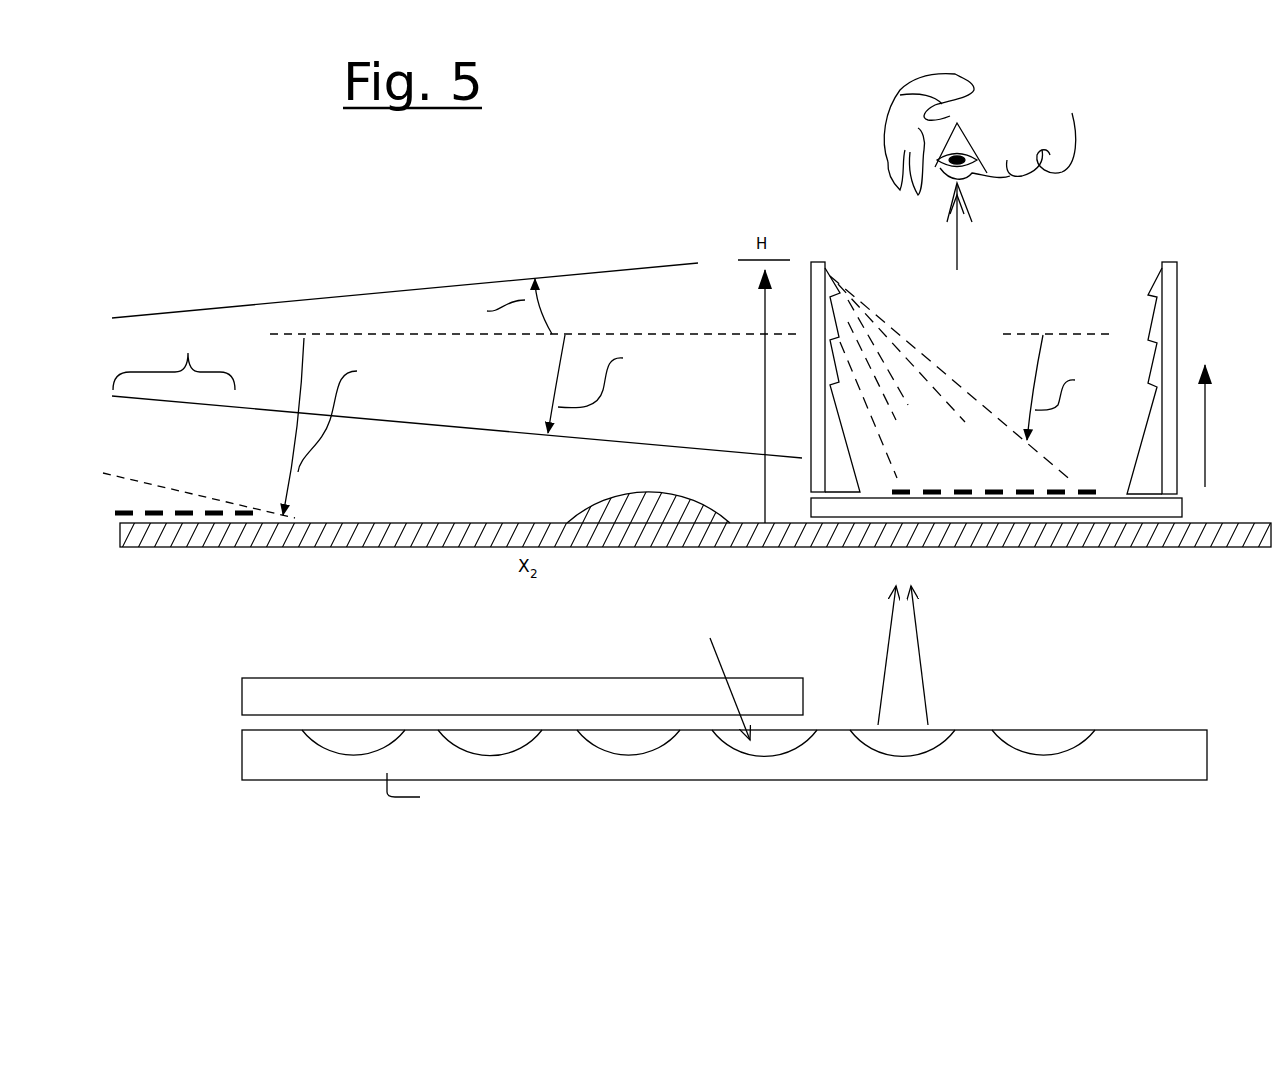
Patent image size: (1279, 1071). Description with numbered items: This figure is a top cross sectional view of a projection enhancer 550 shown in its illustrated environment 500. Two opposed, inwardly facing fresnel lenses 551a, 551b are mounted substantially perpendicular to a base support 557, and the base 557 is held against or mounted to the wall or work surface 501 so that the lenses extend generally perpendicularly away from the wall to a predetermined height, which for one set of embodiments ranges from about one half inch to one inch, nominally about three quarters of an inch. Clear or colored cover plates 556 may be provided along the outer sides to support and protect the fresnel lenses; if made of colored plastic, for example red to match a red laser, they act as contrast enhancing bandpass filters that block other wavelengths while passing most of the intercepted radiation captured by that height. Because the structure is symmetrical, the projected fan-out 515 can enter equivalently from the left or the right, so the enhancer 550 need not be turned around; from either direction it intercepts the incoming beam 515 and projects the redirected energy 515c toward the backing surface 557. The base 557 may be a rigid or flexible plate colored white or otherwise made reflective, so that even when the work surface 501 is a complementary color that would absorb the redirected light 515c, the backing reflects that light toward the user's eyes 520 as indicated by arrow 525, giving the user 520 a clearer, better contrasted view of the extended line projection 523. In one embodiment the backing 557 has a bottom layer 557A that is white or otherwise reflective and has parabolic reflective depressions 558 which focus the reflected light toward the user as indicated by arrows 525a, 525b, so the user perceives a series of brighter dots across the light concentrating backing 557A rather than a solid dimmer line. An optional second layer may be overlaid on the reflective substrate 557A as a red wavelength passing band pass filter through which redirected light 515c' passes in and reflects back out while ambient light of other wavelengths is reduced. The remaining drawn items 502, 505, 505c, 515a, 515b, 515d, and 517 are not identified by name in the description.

The illustrated environment 500 is at (452, 153).
The wall 501 is at (475, 521).
The bump 502 is at (604, 493).
The optical axis 505 is at (603, 333).
The optical axis of reflected light 505c is at (1062, 330).
The projected fan-out 515 is at (623, 266).
The lower light ray 515a is at (188, 493).
The light ray 515b is at (650, 436).
The redirected light 515c is at (951, 379).
The redirected light 515c' is at (720, 676).
The upper light ray 515d is at (472, 283).
The illuminated region 517 is at (253, 421).
The user's eyes 520 is at (1078, 127).
The extended line projection 523 is at (932, 486).
The reflected energy arrow 525 is at (958, 236).
The reflected light arrow 525a is at (878, 628).
The reflected light arrow 525b is at (920, 628).
The projection enhancer 550 is at (1086, 252).
The fresnel lens 551a is at (834, 268).
The fresnel lens 551b is at (1152, 278).
The cover plate 556 is at (812, 370).
The base support 557 is at (983, 512).
The bottom layer 557A is at (983, 727).
The parabolic reflective depressions 558 is at (1033, 747).